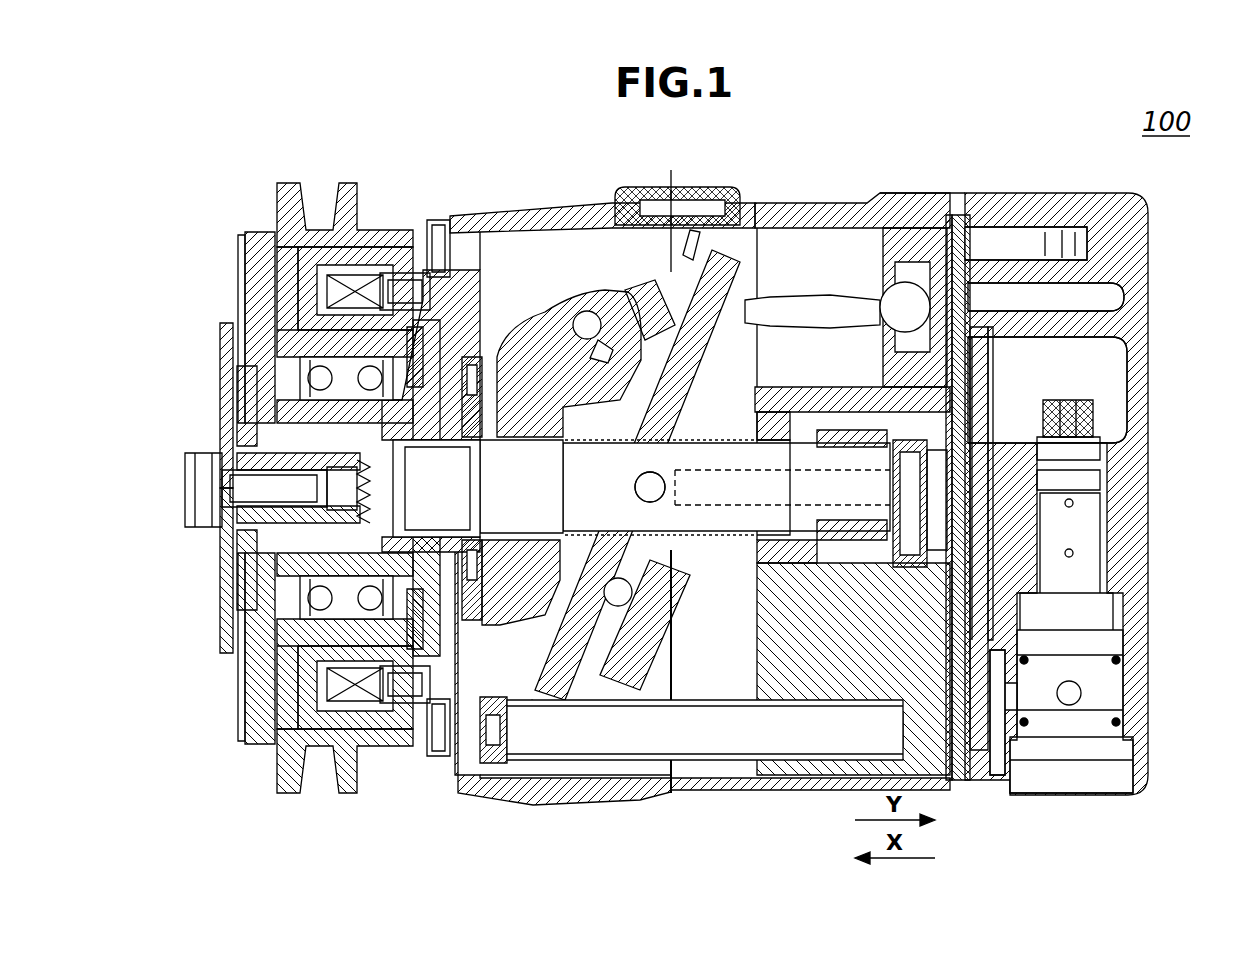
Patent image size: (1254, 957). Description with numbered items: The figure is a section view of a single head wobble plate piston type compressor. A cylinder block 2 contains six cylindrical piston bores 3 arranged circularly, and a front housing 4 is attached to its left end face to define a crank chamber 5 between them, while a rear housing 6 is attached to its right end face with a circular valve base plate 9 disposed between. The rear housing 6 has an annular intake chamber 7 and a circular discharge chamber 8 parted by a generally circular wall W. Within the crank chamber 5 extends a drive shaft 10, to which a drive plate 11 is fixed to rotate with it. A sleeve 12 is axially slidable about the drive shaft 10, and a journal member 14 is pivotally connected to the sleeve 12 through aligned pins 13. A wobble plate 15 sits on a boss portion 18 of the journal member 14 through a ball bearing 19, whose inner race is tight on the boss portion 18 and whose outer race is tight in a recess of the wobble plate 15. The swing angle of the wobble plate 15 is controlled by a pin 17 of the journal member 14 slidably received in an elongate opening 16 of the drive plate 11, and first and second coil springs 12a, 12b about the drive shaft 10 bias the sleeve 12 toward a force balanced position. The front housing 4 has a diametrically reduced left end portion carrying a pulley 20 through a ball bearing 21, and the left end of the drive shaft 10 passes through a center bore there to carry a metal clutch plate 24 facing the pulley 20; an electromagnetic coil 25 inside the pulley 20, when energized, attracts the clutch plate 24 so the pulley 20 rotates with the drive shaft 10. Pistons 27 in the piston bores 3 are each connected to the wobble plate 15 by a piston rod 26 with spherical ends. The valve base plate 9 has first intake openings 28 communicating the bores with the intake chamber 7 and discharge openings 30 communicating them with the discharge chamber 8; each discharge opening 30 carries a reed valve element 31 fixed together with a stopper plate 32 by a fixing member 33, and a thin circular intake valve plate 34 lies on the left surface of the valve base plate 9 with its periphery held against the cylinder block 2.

The cylinder block 2 is at (896, 195).
The cylindrical piston bores 3 is at (862, 240).
The front housing 4 is at (510, 215).
The crank chamber 5 is at (493, 278).
The rear housing 6 is at (1073, 208).
The annular intake chamber 7 is at (1125, 292).
The circular discharge chamber 8 is at (1115, 387).
The valve base plate 9 is at (975, 250).
The drive shaft 10 is at (745, 525).
The drive plate 11 is at (525, 355).
The sleeve 12 is at (665, 545).
The first coil spring 12a is at (590, 450).
The second coil spring 12b is at (770, 430).
The aligned pins 13 is at (635, 487).
The journal member 14 is at (640, 280).
The wobble plate 15 is at (740, 280).
The elongate opening 16 is at (602, 320).
The pin 17 is at (578, 322).
The boss portion 18 is at (675, 640).
The ball bearing 19 is at (640, 615).
The pulley 20 is at (350, 200).
The ball bearing 21 is at (300, 370).
The clutch plate 24 is at (248, 262).
The electromagnetic coil 25 is at (360, 270).
The piston rod 26 is at (813, 300).
The pistons 27 is at (893, 338).
The first intake openings 28 is at (1000, 250).
The discharge openings 30 is at (987, 352).
The reed valve element 31 is at (993, 375).
The stopper plate 32 is at (985, 400).
The fixing member 33 is at (995, 470).
The circular intake valve plate 34 is at (949, 250).
The circular wall W is at (1085, 350).